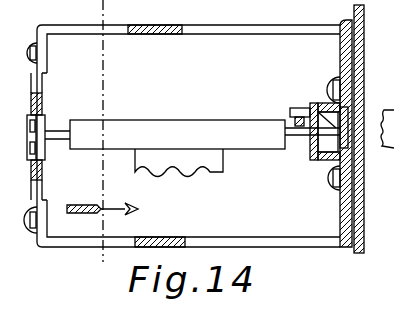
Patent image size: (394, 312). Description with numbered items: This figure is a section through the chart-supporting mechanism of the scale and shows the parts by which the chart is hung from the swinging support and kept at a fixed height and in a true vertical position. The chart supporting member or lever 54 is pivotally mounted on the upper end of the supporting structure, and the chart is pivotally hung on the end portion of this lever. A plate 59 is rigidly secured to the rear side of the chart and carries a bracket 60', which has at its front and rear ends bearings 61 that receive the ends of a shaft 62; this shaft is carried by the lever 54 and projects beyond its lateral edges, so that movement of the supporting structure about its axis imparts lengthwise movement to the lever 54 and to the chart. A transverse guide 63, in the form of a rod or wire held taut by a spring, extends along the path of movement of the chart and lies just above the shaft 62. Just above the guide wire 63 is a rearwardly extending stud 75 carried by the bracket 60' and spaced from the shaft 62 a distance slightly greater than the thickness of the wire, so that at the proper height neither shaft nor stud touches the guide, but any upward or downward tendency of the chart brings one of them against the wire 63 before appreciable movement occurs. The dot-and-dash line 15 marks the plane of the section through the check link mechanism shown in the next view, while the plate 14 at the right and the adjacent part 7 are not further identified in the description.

The bracket 60' is at (182, 136).
The section line 15— 15 is at (107, 143).
The plate 59 is at (341, 207).
The mounting plate 14 is at (368, 246).
The chart supporting member or lever 54 is at (177, 148).
The shaft 62 is at (62, 141).
The bearings 61 is at (46, 115).
The stud 75 is at (291, 111).
The guide wire 63 is at (299, 128).
The adjacent member 7 is at (393, 197).